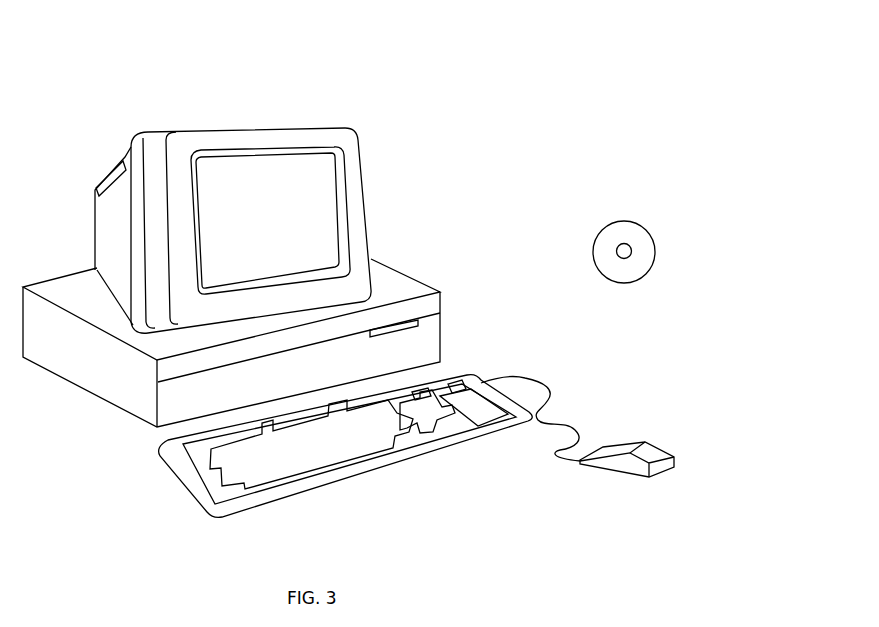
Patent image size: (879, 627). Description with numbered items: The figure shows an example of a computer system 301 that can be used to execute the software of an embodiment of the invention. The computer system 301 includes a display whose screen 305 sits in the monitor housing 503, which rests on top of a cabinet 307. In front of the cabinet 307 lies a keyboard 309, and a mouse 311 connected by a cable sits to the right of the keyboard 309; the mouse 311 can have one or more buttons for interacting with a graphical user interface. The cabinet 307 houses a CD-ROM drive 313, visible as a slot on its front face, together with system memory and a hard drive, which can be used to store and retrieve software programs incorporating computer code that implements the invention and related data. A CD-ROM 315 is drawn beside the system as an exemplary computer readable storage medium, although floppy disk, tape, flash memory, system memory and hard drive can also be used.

The computer system 301 is at (558, 107).
The screen 305 is at (338, 170).
The monitor housing 503 is at (369, 230).
The CD-ROM drive 313 is at (418, 320).
The cabinet 307 is at (120, 409).
The keyboard 309 is at (347, 480).
The mouse 311 is at (663, 449).
The CD-ROM 315 is at (640, 225).